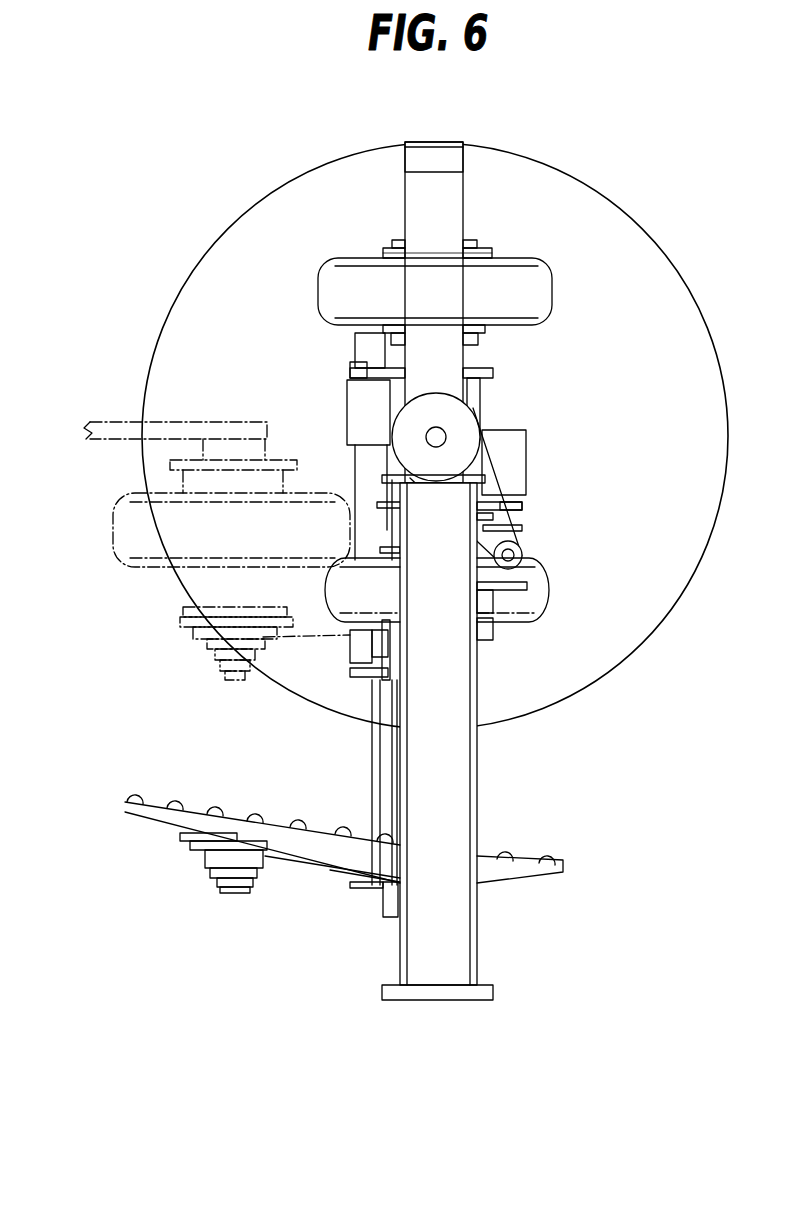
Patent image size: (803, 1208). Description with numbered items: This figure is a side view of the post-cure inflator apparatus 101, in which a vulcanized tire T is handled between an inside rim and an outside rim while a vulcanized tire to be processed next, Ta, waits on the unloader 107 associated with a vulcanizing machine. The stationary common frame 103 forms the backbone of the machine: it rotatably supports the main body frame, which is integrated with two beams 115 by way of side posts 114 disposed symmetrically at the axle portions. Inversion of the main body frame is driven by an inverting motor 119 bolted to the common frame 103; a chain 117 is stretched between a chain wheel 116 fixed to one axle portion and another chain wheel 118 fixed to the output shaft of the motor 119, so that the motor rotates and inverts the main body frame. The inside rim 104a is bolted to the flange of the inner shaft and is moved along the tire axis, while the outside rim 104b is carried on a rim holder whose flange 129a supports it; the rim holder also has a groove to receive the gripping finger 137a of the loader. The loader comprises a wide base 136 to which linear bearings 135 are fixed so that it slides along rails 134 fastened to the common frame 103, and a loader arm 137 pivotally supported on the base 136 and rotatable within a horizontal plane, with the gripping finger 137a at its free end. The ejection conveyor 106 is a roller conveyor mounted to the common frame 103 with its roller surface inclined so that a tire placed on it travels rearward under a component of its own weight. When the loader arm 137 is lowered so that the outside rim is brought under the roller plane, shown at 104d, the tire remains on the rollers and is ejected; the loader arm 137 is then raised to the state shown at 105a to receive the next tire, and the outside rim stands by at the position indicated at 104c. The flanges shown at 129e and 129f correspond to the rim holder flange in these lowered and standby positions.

The tire mounting machine 101 is at (540, 210).
The common frame 103 is at (450, 770).
The inside rim 104a is at (490, 331).
The outside rim 104b is at (488, 255).
The outside rim (standby position) 104c is at (185, 612).
The outside rim (lowered position) 104d is at (188, 841).
The loader arm (raised state) 105a is at (215, 645).
The ejection conveyor 106 is at (125, 802).
The unloader 107 is at (123, 425).
The side post 114 is at (425, 228).
The beam 115 is at (423, 155).
The chain wheel 116 is at (467, 437).
The chain 117 is at (500, 518).
The chain wheel 118 is at (522, 553).
The inverting motor 119 is at (517, 575).
The flange 129a is at (487, 255).
The flange 129e is at (195, 627).
The flange 129f is at (190, 857).
The rail 134 is at (392, 887).
The linear bearing 135 is at (385, 893).
The base 136 is at (360, 877).
The loader arm 137 is at (300, 873).
The gripping finger 137a is at (225, 863).
The vulcanized tire T is at (538, 290).
The vulcanized tire to be processed next Ta is at (132, 507).